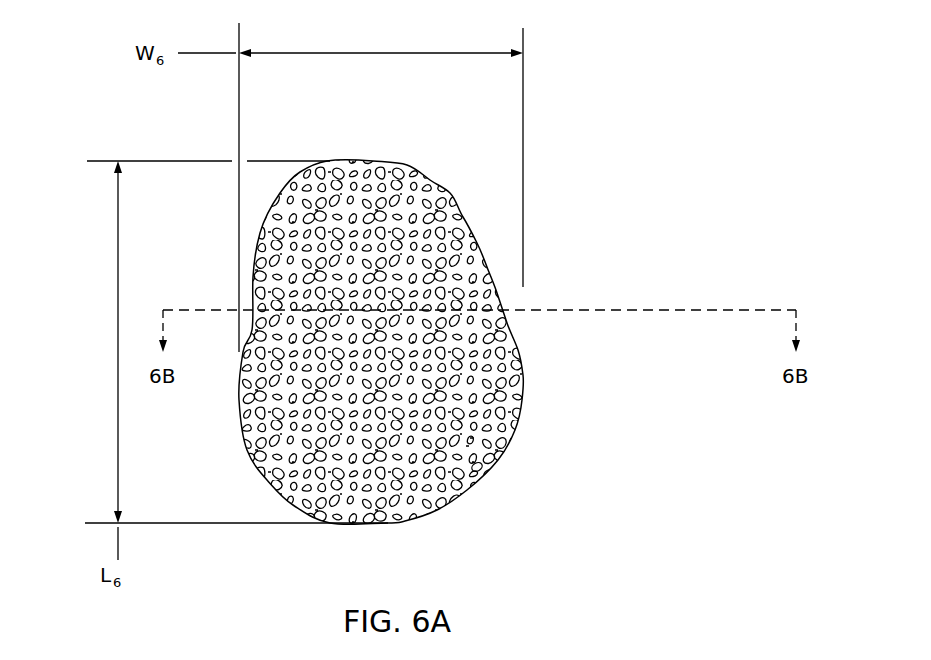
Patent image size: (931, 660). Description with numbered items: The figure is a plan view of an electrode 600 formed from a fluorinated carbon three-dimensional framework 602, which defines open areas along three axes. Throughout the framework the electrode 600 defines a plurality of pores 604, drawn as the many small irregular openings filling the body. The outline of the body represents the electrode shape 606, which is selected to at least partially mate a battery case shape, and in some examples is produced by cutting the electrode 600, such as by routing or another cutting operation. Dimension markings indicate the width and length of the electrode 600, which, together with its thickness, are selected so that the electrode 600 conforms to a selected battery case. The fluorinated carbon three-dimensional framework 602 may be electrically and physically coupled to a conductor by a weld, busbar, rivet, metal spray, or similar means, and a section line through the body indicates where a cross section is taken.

The electrode 600 is at (331, 290).
The fluorinated carbon 3D framework 602 is at (485, 473).
The pores 604 is at (482, 443).
The electrode shape 606 is at (523, 375).